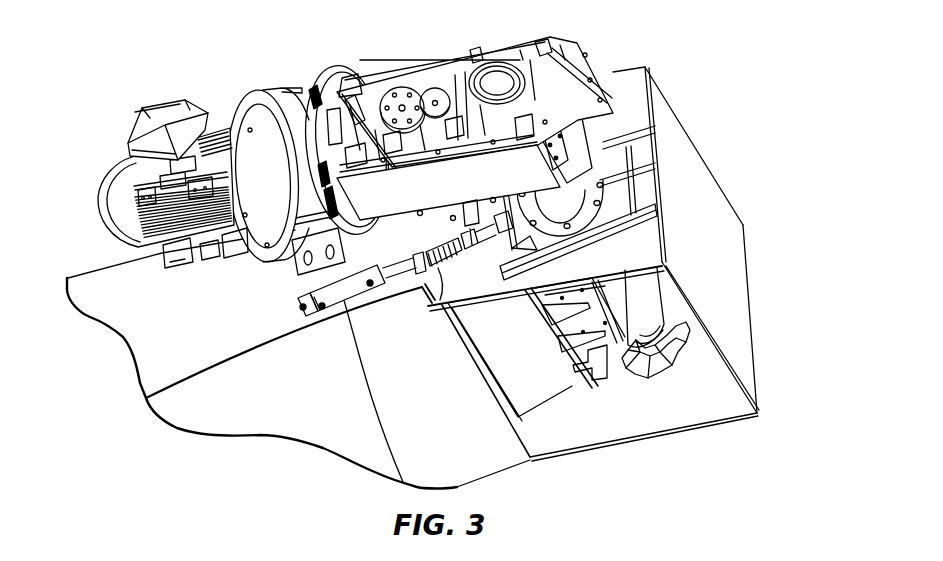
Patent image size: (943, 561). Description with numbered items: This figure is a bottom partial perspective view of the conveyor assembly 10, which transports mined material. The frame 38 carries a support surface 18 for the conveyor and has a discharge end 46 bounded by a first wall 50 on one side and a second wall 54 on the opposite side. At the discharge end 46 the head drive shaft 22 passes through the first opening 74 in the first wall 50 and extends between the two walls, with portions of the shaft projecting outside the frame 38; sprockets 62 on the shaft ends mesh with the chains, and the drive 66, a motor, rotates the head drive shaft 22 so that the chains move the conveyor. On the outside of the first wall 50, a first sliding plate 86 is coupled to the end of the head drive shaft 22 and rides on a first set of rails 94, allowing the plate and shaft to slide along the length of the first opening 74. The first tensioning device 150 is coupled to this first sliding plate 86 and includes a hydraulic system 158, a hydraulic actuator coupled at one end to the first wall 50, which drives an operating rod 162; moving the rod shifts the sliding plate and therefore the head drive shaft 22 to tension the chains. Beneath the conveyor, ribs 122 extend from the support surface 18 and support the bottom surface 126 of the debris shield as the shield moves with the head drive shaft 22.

The conveyor assembly 10 is at (134, 83).
The drive 66 is at (280, 84).
The first wall 50 is at (634, 113).
The first sliding plate 86 is at (613, 160).
The discharge end 46 is at (737, 81).
The first set of rails 94 is at (647, 125).
The first opening 74 is at (663, 170).
The first tensioning device 150 is at (293, 292).
The hydraulic system 158 is at (340, 297).
The frame 38 is at (207, 413).
The operating rod 162 is at (439, 300).
The support surface 18 is at (503, 347).
The ribs 122 is at (586, 350).
The bottom surface 126 is at (650, 380).
The head drive shaft 22 is at (665, 373).
The sprockets 62 is at (718, 388).
The second wall 54 is at (740, 420).